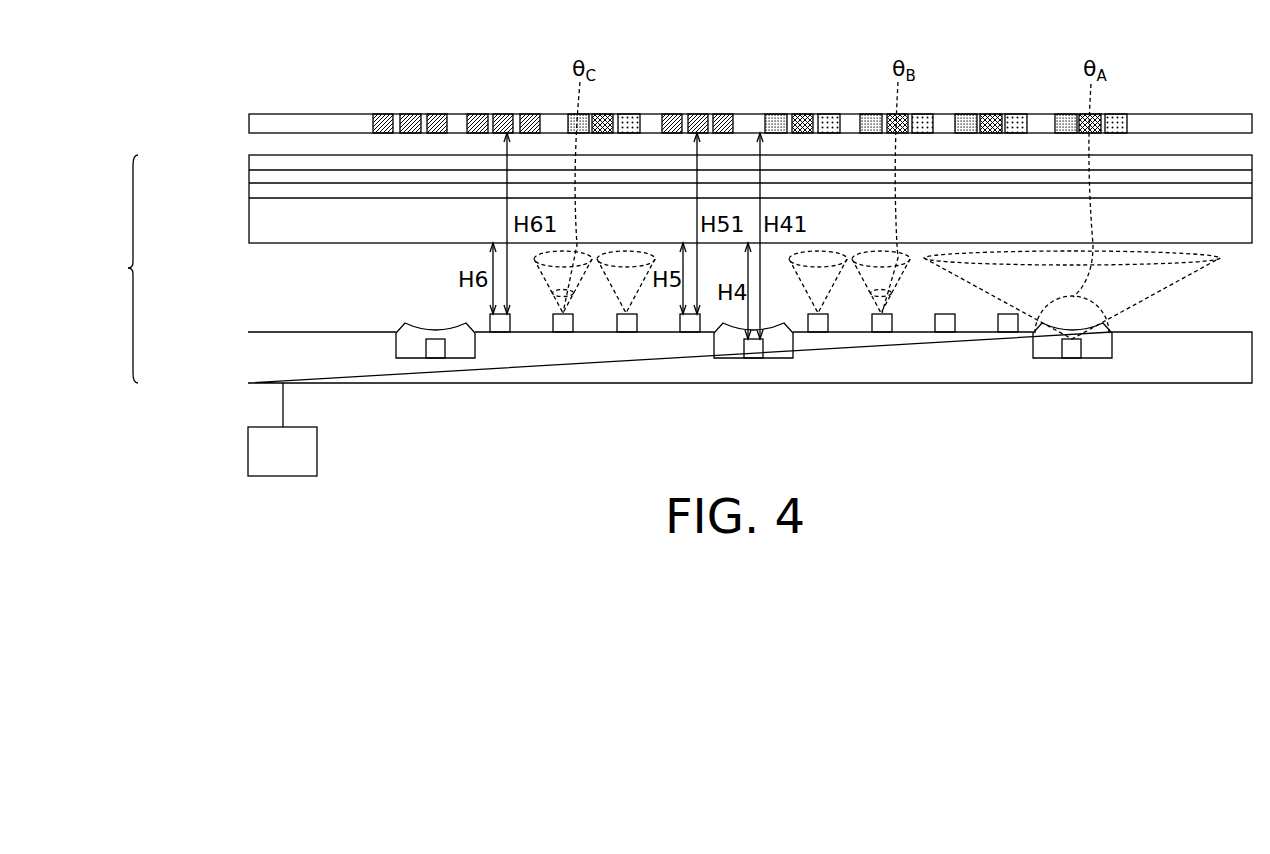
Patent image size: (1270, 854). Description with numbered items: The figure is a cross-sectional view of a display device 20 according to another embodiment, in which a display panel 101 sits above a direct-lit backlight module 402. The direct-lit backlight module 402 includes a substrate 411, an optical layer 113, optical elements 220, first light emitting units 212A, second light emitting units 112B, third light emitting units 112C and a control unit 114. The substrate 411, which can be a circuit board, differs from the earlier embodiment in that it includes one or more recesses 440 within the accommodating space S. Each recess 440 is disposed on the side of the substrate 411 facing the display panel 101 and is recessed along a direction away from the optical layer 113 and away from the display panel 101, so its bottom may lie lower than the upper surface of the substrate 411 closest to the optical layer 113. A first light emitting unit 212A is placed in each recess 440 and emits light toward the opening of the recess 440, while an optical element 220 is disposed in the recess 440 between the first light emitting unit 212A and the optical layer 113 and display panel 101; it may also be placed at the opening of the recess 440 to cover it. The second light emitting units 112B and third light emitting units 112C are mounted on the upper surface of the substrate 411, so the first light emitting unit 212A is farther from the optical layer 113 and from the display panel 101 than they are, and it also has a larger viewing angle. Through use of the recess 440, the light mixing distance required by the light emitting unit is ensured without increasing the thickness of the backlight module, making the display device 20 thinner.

The display device 20 is at (148, 56).
The display panel 101 is at (248, 124).
The optical layer 113 is at (243, 198).
The direct-lit backlight module 402 is at (112, 269).
The accommodating space S is at (268, 290).
The substrate 411 is at (248, 358).
The control unit 114 is at (248, 452).
The recess 440 is at (422, 313).
The first light emitting unit 212A is at (433, 350).
The optical element 220 is at (458, 348).
The third light emitting unit 112C is at (565, 325).
The second light emitting unit 112B is at (690, 325).